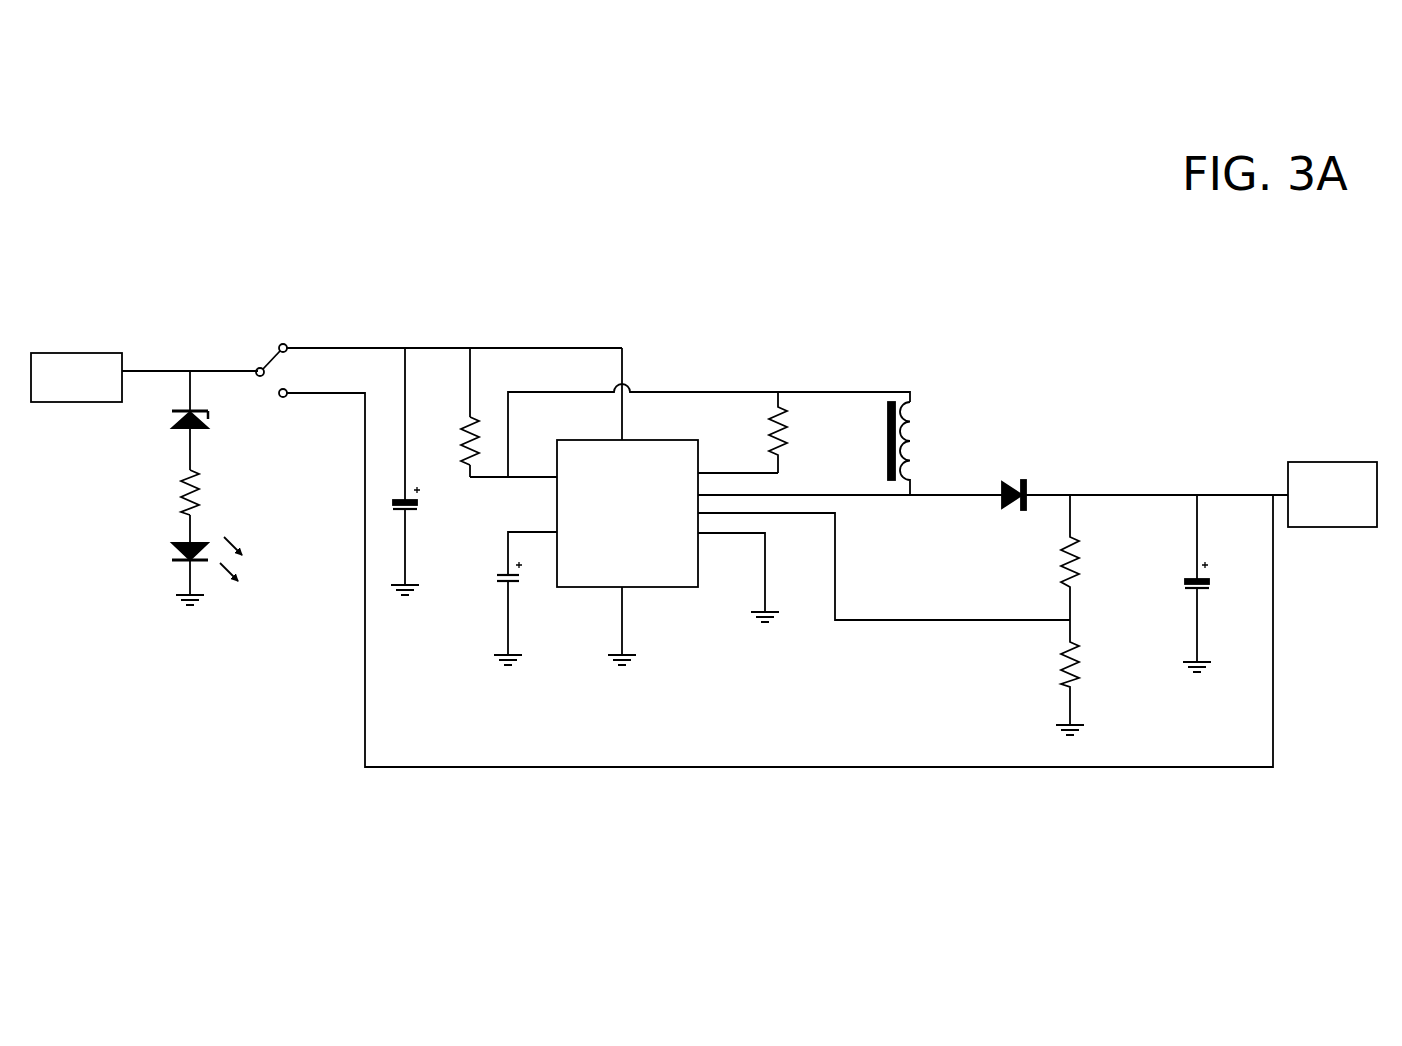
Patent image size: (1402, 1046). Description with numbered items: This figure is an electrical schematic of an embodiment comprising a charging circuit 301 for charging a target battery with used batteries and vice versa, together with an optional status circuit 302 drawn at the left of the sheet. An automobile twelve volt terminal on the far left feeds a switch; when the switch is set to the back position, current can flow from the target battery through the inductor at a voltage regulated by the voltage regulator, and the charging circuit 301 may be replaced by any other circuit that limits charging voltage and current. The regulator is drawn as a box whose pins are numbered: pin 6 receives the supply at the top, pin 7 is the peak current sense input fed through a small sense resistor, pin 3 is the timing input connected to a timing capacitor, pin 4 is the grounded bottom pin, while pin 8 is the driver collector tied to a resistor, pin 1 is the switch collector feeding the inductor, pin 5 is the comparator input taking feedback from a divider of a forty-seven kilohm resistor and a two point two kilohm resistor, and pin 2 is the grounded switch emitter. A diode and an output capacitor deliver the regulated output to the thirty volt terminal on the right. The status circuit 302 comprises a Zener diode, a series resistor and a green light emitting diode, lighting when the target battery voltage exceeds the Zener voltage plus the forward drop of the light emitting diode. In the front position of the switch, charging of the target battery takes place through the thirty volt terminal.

The charging circuit 301 is at (790, 317).
The status circuit 302 is at (123, 485).
The U1 pin 1 (SWC) 1 is at (993, 486).
The U1 pin 2 (SWE) 2 is at (738, 570).
The U1 pin 3 (CT) 3 is at (532, 544).
The U1 pin 4 (GND) 4 is at (622, 626).
The U1 pin 5 (CI) 5 is at (884, 559).
The U1 pin 6 (VCC) 6 is at (633, 394).
The U1 pin 7 (IPK) 7 is at (513, 467).
The U1 pin 8 (DC) 8 is at (738, 465).